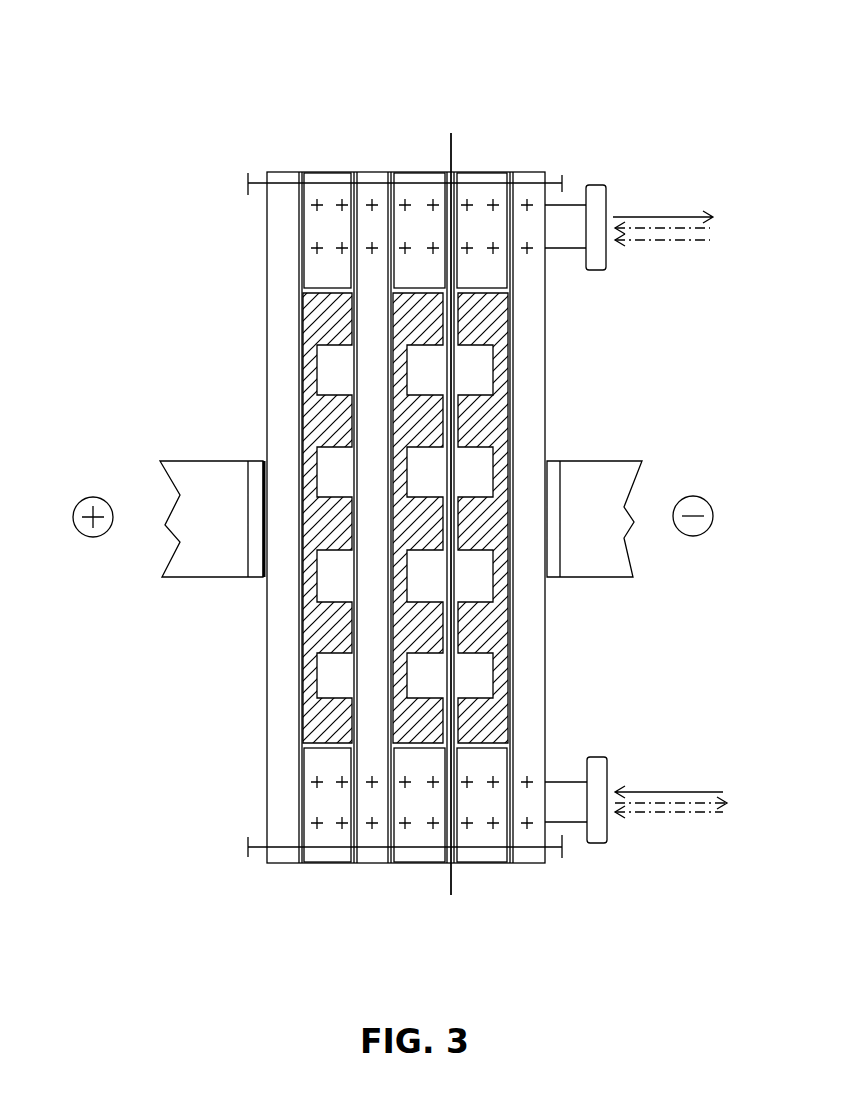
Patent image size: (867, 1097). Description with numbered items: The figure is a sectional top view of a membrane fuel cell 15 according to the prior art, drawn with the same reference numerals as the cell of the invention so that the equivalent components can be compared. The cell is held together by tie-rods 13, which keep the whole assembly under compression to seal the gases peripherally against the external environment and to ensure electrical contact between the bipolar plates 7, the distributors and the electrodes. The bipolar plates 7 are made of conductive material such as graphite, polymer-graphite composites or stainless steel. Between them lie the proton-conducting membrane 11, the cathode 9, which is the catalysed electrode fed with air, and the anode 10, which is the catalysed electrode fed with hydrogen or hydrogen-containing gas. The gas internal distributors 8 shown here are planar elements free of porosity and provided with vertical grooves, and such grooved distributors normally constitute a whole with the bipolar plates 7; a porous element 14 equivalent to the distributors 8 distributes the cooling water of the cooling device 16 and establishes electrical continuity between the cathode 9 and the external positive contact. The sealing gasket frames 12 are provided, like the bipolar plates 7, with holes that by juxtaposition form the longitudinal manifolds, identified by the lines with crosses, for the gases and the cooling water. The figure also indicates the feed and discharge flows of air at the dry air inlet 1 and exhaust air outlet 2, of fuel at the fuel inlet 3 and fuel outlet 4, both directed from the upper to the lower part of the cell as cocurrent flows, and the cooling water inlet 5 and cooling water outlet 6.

The dry air inlet 1 is at (669, 775).
The exhaust air outlet 2 is at (663, 199).
The fuel inlet 3 is at (669, 828).
The fuel outlet 4 is at (662, 256).
The cooling water inlet 5 is at (677, 232).
The cooling water outlet 6 is at (682, 805).
The bipolar plates 7 is at (283, 177).
The gas internal distributors 8 is at (384, 503).
The cathode 9 is at (443, 323).
The anode 10 is at (463, 607).
The proton-conducting membrane 11 is at (447, 875).
The sealing gasket frames 12 is at (328, 178).
The tie-rods 13 is at (243, 187).
The porous element 14 is at (330, 425).
The fuel cell 15 is at (442, 880).
The cooling device 16 is at (325, 872).